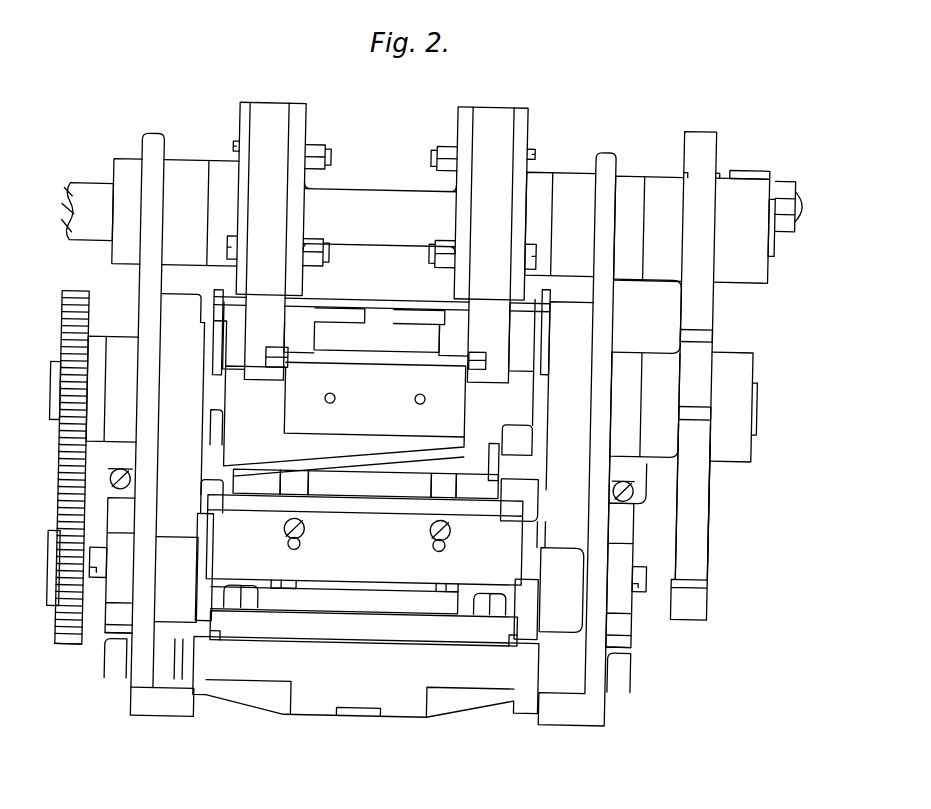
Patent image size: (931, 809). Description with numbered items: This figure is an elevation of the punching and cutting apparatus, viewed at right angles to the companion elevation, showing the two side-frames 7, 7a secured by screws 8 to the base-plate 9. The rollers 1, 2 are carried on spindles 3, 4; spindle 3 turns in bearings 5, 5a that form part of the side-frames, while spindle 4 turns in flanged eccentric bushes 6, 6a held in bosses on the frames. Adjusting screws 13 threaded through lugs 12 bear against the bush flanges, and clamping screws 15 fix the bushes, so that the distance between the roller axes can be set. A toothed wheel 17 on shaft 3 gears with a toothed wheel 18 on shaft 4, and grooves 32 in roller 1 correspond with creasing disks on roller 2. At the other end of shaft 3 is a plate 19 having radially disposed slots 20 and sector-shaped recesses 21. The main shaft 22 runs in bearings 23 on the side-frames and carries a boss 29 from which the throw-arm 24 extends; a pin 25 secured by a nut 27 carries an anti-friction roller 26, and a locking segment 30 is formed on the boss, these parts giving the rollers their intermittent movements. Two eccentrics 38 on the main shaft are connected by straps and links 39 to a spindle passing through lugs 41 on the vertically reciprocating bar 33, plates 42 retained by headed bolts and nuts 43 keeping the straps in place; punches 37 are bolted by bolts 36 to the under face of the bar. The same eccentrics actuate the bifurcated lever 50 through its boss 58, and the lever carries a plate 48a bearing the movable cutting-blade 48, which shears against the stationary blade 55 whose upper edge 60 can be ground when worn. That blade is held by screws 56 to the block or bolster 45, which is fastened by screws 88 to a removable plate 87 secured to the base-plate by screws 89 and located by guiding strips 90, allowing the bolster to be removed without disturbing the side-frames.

The roller 1 is at (371, 455).
The roller 2 is at (367, 576).
The spindle 3 is at (757, 397).
The spindle 4 is at (52, 578).
The bearing 5 is at (634, 349).
The bearing 5a is at (112, 389).
The flanged eccentric bush 6 is at (630, 633).
The flanged eccentric bush 6a is at (114, 634).
The side-frame 7 is at (577, 439).
The side-frame 7a is at (168, 424).
The screw 8 is at (367, 666).
The base-plate 9 is at (388, 617).
The lug 12 is at (124, 476).
The adjusting screw 13 is at (112, 486).
The clamping screw 15 is at (100, 555).
The toothed wheel 17 is at (85, 316).
The toothed wheel 18 is at (66, 648).
The plate 19 is at (712, 506).
The radially disposed slot 20 is at (694, 402).
The sector-shaped recess 21 is at (692, 502).
The main shaft 22 is at (783, 244).
The bearing 23 is at (354, 218).
The throw-arm 24 is at (754, 165).
The pin 25 is at (798, 188).
The anti-friction roller 26 is at (678, 168).
The nut 27 is at (782, 175).
The boss 29 is at (692, 229).
The locking segment 30 is at (695, 356).
The groove 32 is at (368, 484).
The bar or frame 33 is at (375, 397).
The bolt 36 is at (272, 351).
The punch 37 is at (483, 462).
The eccentric 38 is at (300, 112).
The straps and links 39 is at (377, 337).
The lug 41 is at (452, 318).
The plate 42 is at (250, 107).
The headed bolt and nut 43 is at (228, 148).
The block or bolster 45 is at (334, 600).
The cutting-blade 48 is at (344, 423).
The plate 48a is at (374, 399).
The bifurcated lever 50 is at (219, 300).
The stationary blade or shearing plate 55 is at (364, 540).
The screw 56 is at (308, 530).
The boss 58 is at (338, 311).
The upper edge 60 is at (201, 487).
The removable plate 87 is at (364, 628).
The screw 88 is at (364, 594).
The screw 89 is at (258, 610).
The guiding strip 90 is at (363, 636).